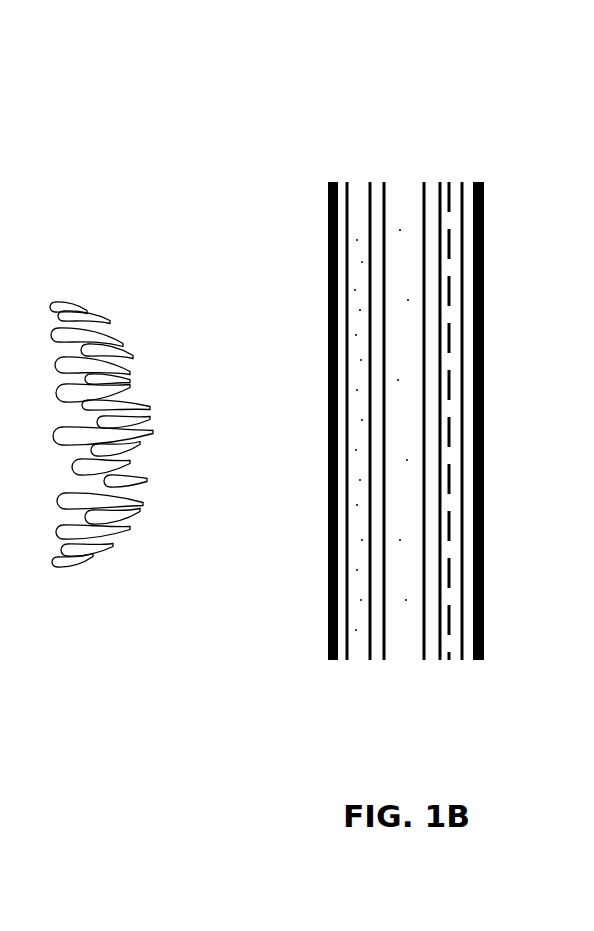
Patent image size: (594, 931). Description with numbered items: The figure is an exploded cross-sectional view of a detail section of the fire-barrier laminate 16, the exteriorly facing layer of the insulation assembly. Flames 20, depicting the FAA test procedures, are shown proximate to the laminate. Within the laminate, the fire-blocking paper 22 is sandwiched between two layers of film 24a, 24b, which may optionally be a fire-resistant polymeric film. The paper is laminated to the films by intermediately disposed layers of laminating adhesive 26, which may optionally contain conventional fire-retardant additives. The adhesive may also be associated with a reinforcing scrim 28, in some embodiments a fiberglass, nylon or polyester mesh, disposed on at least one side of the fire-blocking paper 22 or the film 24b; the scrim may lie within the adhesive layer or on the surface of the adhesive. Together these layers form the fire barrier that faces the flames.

The fire-barrier laminate 16 is at (396, 343).
The flames 20 is at (113, 560).
The fire-blocking paper 22 is at (403, 195).
The film 24a is at (330, 205).
The film 24b is at (483, 237).
The laminating adhesive 26 is at (360, 203).
The reinforcing scrim 28 is at (443, 177).